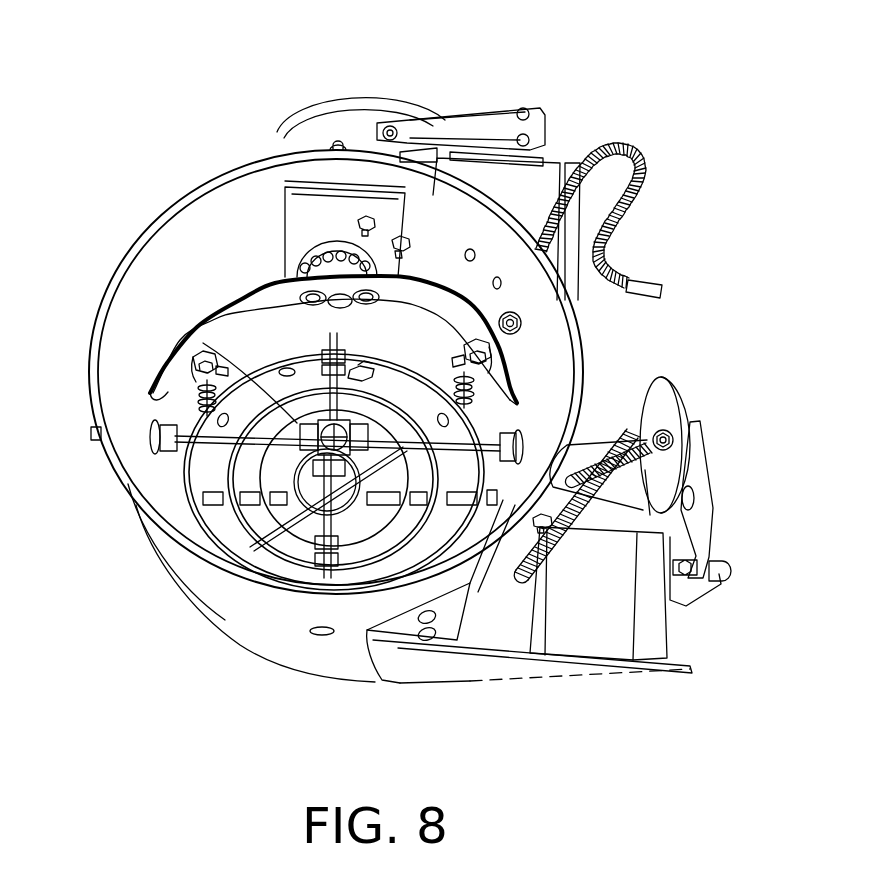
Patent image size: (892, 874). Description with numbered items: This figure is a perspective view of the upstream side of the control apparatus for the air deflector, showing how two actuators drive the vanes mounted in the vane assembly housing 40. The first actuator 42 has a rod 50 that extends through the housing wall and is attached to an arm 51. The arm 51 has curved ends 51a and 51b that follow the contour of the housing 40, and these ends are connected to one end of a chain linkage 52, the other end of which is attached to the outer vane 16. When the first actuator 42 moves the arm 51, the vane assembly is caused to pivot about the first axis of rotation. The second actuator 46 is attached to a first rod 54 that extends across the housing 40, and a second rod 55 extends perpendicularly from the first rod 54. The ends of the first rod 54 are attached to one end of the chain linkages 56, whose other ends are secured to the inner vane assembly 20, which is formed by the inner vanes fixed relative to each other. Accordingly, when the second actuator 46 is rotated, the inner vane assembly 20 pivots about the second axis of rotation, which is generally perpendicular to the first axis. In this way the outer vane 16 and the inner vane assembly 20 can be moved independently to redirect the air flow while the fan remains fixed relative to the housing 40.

The outer vane 16 is at (190, 512).
The inner vane assembly 20 is at (275, 552).
The vane assembly housing 40 is at (315, 653).
The first actuator 42 is at (533, 157).
The second actuator 46 is at (610, 650).
The rod 50 is at (335, 302).
The arm 51 is at (250, 307).
The curved end 51a is at (190, 360).
The curved end 51b is at (500, 367).
The chain linkage 52 is at (196, 410).
The first rod 54 is at (225, 495).
The second rod 55 is at (220, 343).
The chain linkages 56 is at (372, 367).